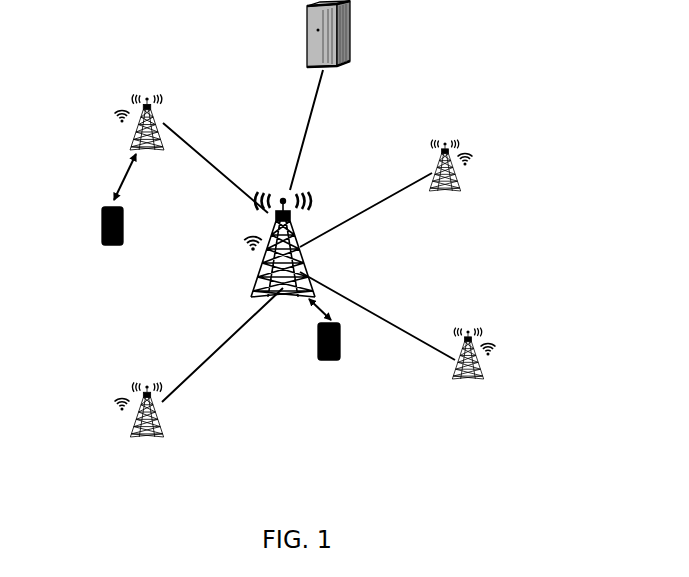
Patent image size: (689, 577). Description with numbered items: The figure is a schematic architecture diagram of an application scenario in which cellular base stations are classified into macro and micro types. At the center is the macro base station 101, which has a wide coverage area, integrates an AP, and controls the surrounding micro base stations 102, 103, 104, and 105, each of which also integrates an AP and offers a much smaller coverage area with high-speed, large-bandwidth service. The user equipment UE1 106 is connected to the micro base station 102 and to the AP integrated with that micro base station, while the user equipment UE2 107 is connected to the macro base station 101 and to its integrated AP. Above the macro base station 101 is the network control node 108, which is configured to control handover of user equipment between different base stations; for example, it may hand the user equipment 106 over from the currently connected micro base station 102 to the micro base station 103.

The macro base station 101 is at (265, 232).
The micro base station 102 is at (123, 108).
The micro base station 103 is at (463, 152).
The micro base station 104 is at (123, 397).
The micro base station 105 is at (487, 340).
The user equipment UE1 106 is at (98, 212).
The user equipment UE2 107 is at (310, 342).
The network control node 108 is at (307, 34).